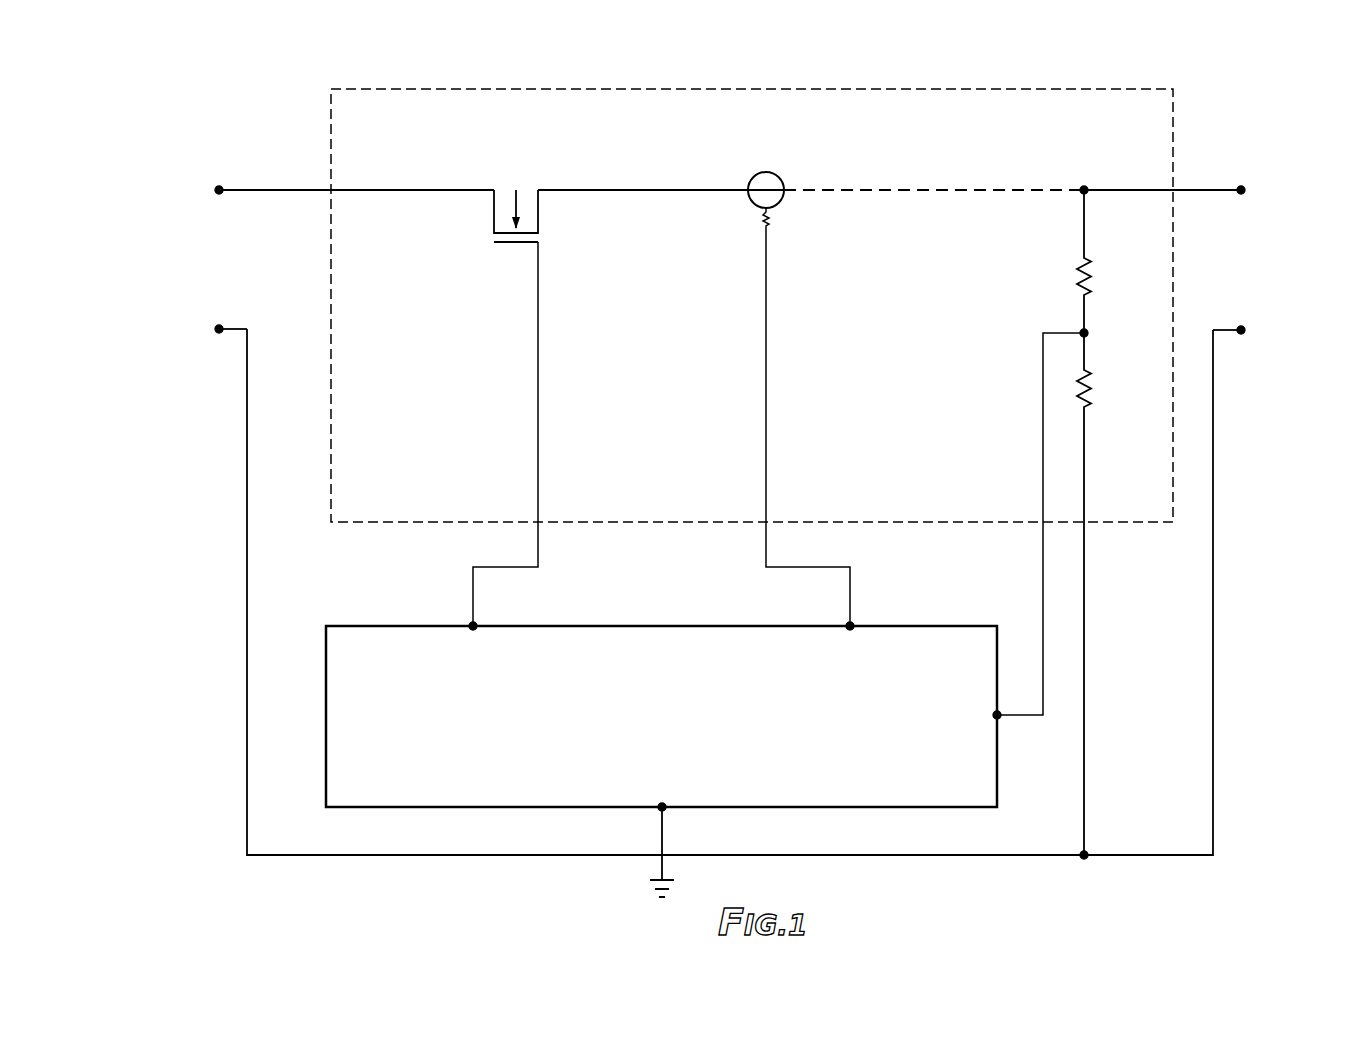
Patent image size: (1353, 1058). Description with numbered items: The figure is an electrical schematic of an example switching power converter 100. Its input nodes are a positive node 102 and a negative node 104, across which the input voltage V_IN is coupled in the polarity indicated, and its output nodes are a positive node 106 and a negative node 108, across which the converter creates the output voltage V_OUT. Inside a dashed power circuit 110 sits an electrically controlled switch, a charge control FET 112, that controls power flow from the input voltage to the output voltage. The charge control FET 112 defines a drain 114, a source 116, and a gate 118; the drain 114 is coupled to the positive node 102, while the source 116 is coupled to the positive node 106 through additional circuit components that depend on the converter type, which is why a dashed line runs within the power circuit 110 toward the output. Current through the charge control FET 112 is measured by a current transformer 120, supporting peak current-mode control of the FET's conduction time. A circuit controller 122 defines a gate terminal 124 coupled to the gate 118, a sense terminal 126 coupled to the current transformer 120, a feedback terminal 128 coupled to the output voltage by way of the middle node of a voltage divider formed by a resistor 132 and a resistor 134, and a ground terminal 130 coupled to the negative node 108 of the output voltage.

The switching power converter 100 is at (147, 56).
The positive node 102 is at (212, 184).
The negative node 104 is at (216, 344).
The positive node 106 is at (1247, 182).
The negative node 108 is at (1248, 341).
The power circuit 110 is at (337, 87).
The charge control FET 112 is at (497, 251).
The drain 114 is at (456, 188).
The source 116 is at (607, 188).
The gate 118 is at (538, 277).
The current transformer 120 is at (787, 171).
The circuit controller 122 is at (641, 741).
The gate terminal 124 is at (472, 625).
The sense terminal 126 is at (851, 626).
The feedback terminal 128 is at (998, 716).
The ground terminal 130 is at (660, 809).
The resistor 132 is at (1075, 271).
The resistor 134 is at (1090, 406).